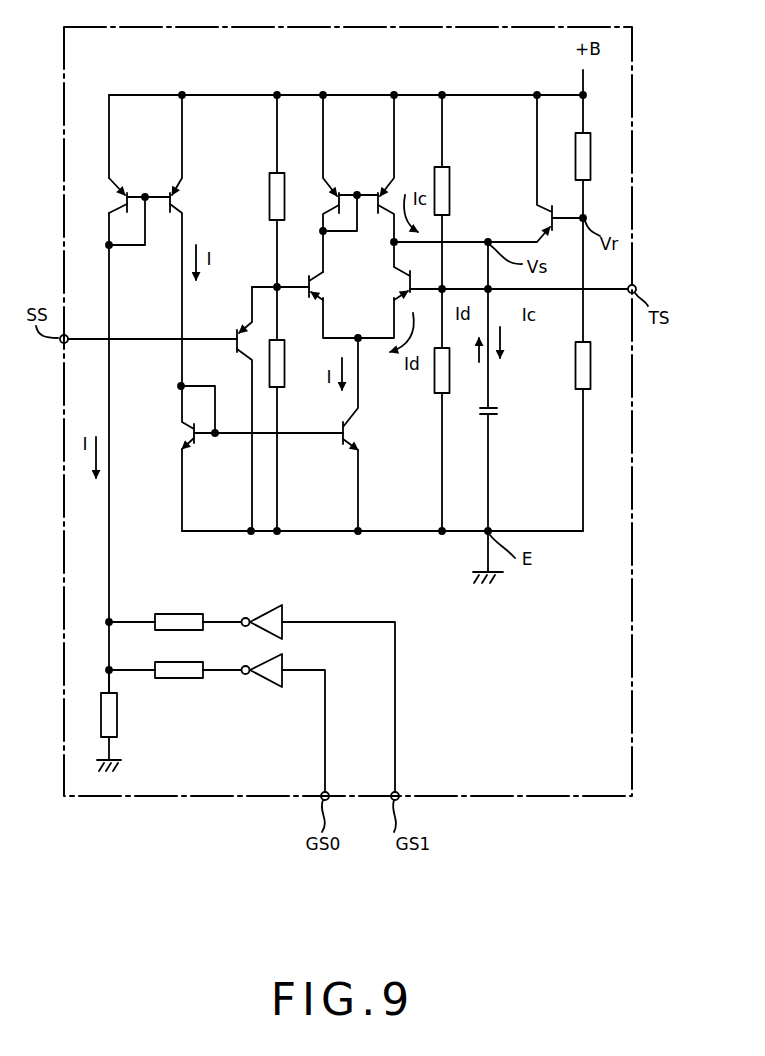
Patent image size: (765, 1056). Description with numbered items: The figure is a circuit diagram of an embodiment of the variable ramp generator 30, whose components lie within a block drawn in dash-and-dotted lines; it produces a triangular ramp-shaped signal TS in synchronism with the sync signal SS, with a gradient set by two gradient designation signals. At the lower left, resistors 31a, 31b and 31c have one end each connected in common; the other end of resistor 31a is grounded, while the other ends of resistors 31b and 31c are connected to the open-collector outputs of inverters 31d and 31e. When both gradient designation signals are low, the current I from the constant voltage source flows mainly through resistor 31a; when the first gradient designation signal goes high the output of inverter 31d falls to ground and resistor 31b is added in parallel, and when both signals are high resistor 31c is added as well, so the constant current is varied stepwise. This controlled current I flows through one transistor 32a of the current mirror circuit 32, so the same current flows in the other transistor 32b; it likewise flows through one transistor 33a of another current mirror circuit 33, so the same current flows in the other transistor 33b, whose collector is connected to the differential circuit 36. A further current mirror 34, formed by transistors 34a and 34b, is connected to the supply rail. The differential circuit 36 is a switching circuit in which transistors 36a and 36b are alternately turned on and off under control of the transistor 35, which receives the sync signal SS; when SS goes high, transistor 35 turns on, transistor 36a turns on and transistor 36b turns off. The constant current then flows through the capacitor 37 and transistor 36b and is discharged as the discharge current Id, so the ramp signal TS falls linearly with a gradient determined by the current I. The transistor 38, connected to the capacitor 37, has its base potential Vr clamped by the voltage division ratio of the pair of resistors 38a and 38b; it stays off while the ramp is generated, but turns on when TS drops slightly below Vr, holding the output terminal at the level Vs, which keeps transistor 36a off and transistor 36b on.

The variable ramp generator 30 is at (107, 796).
The resistor 31a is at (118, 712).
The resistor 31b is at (185, 662).
The resistor 31c is at (183, 614).
The inverter 31d is at (283, 660).
The inverter 31e is at (278, 618).
The current mirror circuit 32 is at (179, 240).
The transistor 32a is at (113, 178).
The transistor 32b is at (185, 178).
The current mirror circuit 33 is at (275, 434).
The transistor 33a is at (182, 403).
The transistor 33b is at (358, 412).
The current mirror circuit 34 is at (376, 168).
The transistor 34a is at (325, 172).
The transistor 34b is at (395, 168).
The transistor 35 is at (238, 328).
The differential circuit 36 is at (375, 286).
The transistor 36a is at (324, 275).
The transistor 36b is at (403, 268).
The capacitor 37 is at (501, 411).
The transistor 38 is at (537, 210).
The resistor 38a is at (592, 140).
The resistor 38b is at (574, 368).